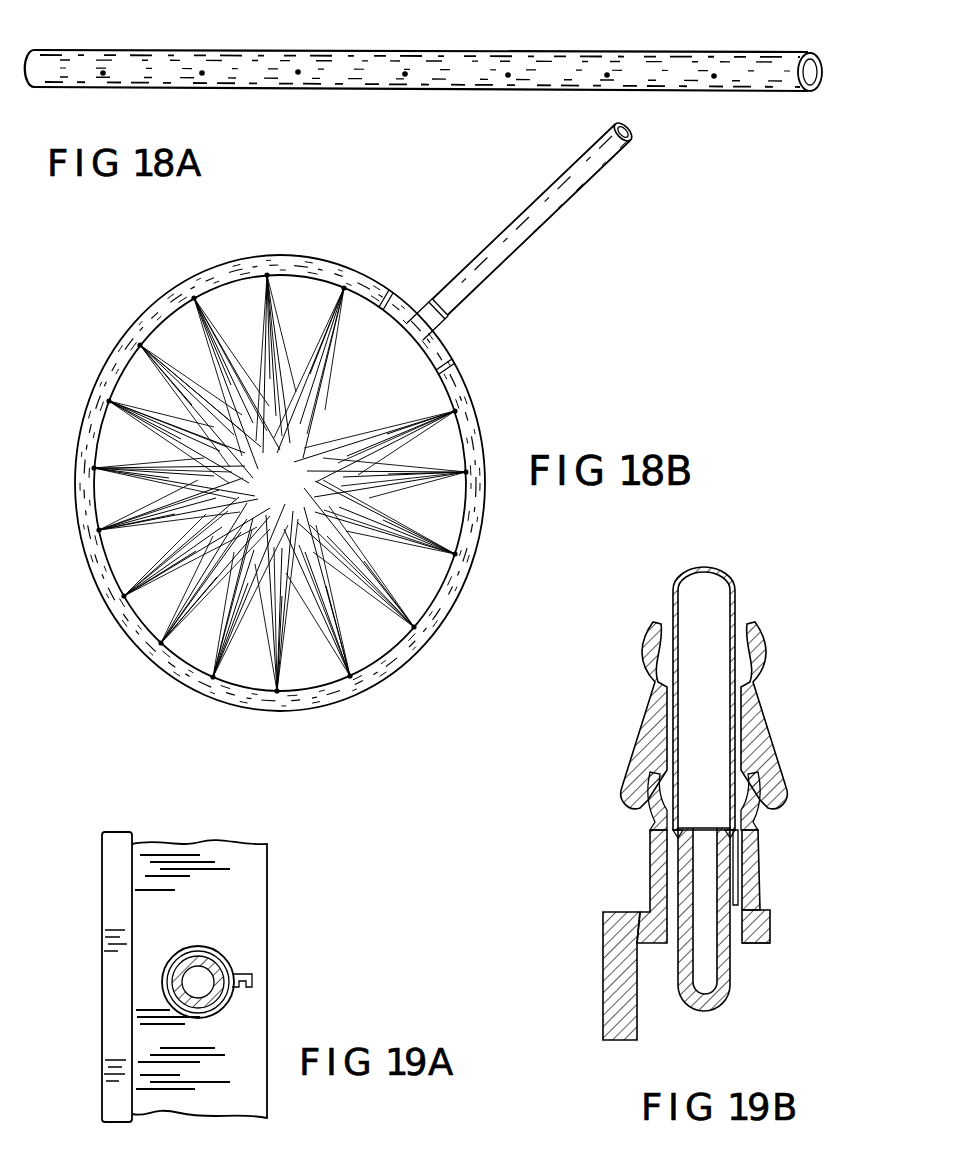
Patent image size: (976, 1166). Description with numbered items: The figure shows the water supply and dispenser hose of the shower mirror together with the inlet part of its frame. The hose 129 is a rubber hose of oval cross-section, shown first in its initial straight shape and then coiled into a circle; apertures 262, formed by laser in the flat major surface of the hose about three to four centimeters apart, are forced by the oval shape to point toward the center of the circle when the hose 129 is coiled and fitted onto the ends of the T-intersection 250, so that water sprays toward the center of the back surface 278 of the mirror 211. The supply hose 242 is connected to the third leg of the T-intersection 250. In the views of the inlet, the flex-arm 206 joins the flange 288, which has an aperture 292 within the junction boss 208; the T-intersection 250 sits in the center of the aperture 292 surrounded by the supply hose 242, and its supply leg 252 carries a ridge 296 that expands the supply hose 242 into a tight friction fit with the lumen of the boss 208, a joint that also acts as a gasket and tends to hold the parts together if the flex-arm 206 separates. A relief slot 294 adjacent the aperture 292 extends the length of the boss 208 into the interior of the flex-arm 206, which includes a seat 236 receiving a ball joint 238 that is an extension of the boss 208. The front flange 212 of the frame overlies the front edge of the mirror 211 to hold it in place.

In FIG. 18A, the hose 129 is at (563, 76).
In FIG. 18B, the hose 129 is at (473, 428).
In FIG. 18A, the apertures 262 is at (404, 76).
In FIG. 18B, the apertures 262 is at (342, 272).
In FIG. 18B, the supply hose 242 is at (537, 228).
In FIG. 19A, the supply hose 242 is at (233, 950).
In FIG. 19B, the supply hose 242 is at (736, 590).
In FIG. 18B, the T-intersection 250 is at (424, 338).
In FIG. 19A, the T-intersection 250 is at (205, 955).
In FIG. 19B, the T-intersection 250 is at (733, 965).
In FIG. 18B, the mirror 211 is at (142, 541).
In FIG. 18B, the back surface 278 is at (150, 612).
In FIG. 19A, the flange 288 is at (162, 876).
In FIG. 19B, the flange 288 is at (763, 935).
In FIG. 19A, the aperture 292 is at (200, 950).
In FIG. 19B, the aperture 292 is at (603, 928).
In FIG. 19A, the relief slot 294 is at (241, 975).
In FIG. 19B, the relief slot 294 is at (762, 914).
In FIG. 19A, the front flange 212 is at (112, 969).
In FIG. 19B, the front flange 212 is at (607, 949).
In FIG. 19B, the flex-arm 206 is at (753, 720).
In FIG. 19B, the seat 236 is at (777, 788).
In FIG. 19B, the ball joint 238 is at (762, 814).
In FIG. 19B, the supply leg 252 is at (683, 863).
In FIG. 19B, the ridge 296 is at (733, 862).
In FIG. 19B, the junction boss 208 is at (752, 892).